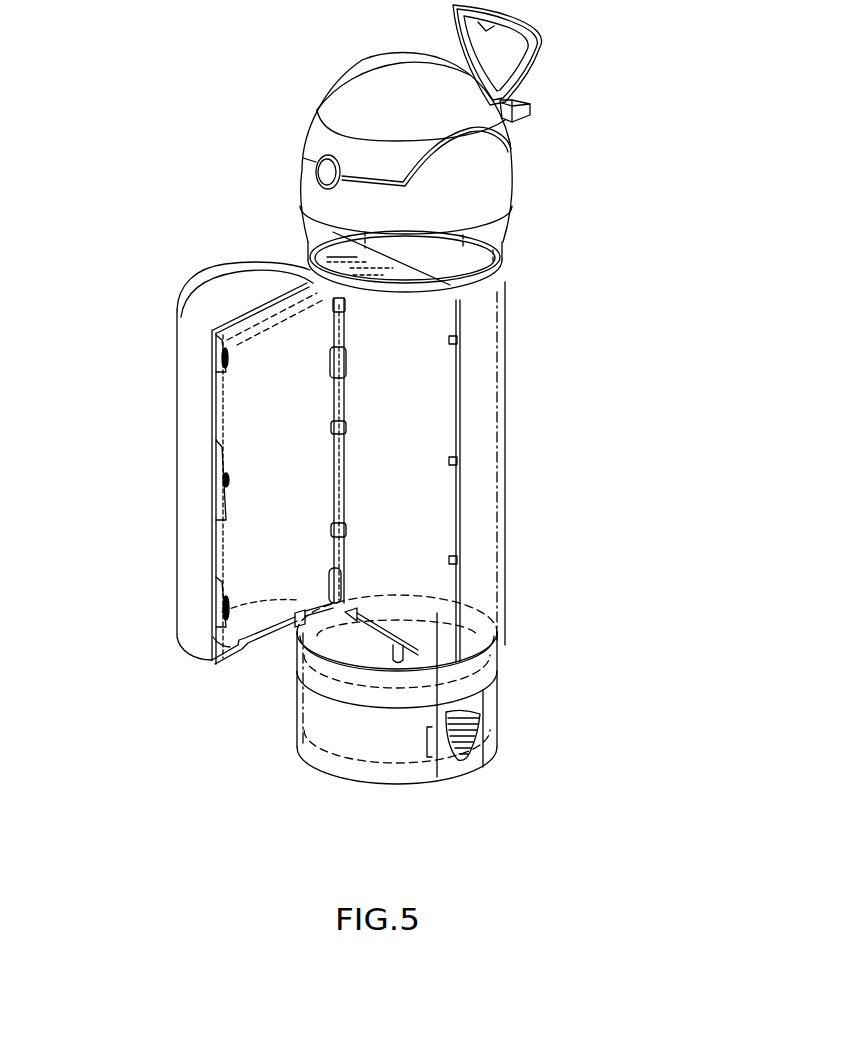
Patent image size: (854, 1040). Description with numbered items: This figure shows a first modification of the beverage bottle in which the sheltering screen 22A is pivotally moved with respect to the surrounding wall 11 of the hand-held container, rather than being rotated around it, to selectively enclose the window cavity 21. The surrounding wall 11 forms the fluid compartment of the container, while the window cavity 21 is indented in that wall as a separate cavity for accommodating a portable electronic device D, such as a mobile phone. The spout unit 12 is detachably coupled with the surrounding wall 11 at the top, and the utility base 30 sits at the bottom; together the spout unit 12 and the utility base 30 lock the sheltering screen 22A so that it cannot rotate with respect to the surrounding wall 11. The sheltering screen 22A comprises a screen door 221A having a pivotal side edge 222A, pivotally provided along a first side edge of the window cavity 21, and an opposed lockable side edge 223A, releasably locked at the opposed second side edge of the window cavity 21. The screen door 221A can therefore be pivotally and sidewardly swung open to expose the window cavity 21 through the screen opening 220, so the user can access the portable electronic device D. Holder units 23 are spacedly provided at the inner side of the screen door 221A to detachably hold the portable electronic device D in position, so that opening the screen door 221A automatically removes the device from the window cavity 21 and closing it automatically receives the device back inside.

The surrounding wall 11 is at (503, 388).
The spout unit 12 is at (457, 177).
The window cavity 21 is at (428, 516).
The sheltering screen 22A is at (503, 468).
The holder units 23 is at (215, 452).
The utility base 30 is at (494, 740).
The screen opening 220 is at (282, 642).
The screen door 221A is at (175, 362).
The pivotal side edge 222A is at (330, 352).
The lockable side edge 223A is at (205, 488).
The portable electronic device D is at (318, 348).